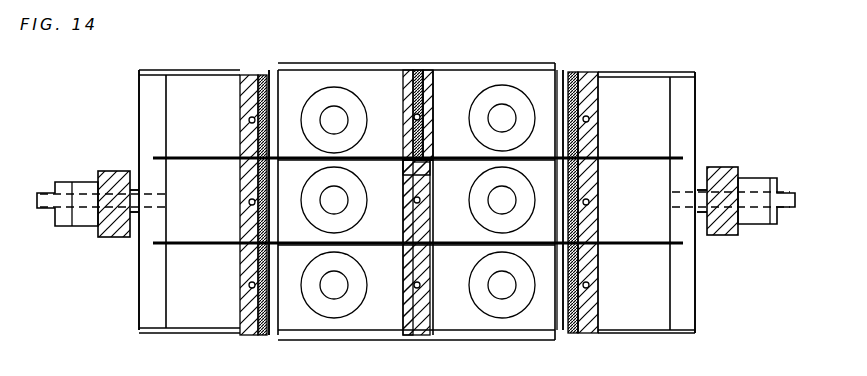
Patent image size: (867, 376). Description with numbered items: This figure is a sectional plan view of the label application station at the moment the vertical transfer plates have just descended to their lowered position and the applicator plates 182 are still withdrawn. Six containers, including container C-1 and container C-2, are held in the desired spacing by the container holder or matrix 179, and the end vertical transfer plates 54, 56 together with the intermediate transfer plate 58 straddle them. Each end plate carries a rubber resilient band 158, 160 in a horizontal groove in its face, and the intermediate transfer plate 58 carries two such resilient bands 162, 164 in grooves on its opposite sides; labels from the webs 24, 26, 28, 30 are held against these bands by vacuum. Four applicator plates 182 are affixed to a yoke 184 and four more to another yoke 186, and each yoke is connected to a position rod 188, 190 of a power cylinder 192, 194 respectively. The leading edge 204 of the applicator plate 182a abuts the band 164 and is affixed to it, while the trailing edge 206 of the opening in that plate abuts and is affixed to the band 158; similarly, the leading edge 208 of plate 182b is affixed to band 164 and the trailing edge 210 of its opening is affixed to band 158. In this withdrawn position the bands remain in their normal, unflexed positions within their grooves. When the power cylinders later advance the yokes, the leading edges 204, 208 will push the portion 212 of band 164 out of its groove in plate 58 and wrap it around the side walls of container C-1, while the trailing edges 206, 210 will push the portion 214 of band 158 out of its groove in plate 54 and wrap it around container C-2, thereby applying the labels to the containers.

The applicator plates 182 is at (218, 330).
The yoke 186 is at (148, 120).
The vertical transfer plate 56 is at (247, 78).
The resilient band 160 is at (240, 128).
The container holder or matrix 179 is at (304, 338).
The web 30 is at (268, 95).
The container C-1 is at (333, 90).
The container C-2 is at (500, 95).
The leading edge 204 is at (409, 72).
The intermediate transfer plate 58 is at (428, 84).
The portion of the band 212 is at (412, 126).
The resilient band 162 is at (420, 130).
The web 28 is at (405, 143).
The web 26 is at (432, 143).
The resilient band 164 is at (412, 168).
The leading edge 208 is at (430, 165).
The web 24 is at (572, 78).
The trailing edge 206 is at (582, 80).
The vertical transfer plate 54 is at (592, 88).
The trailing edge 210 is at (585, 152).
The portion of the band 214 is at (570, 126).
The resilient band 158 is at (574, 165).
The applicator plate 182a is at (656, 70).
The applicator plate 182b is at (640, 163).
The yoke 184 is at (697, 107).
The power cylinder 194 is at (83, 184).
The position rod 190 is at (135, 238).
The power cylinder 192 is at (755, 180).
The position rod 188 is at (700, 215).